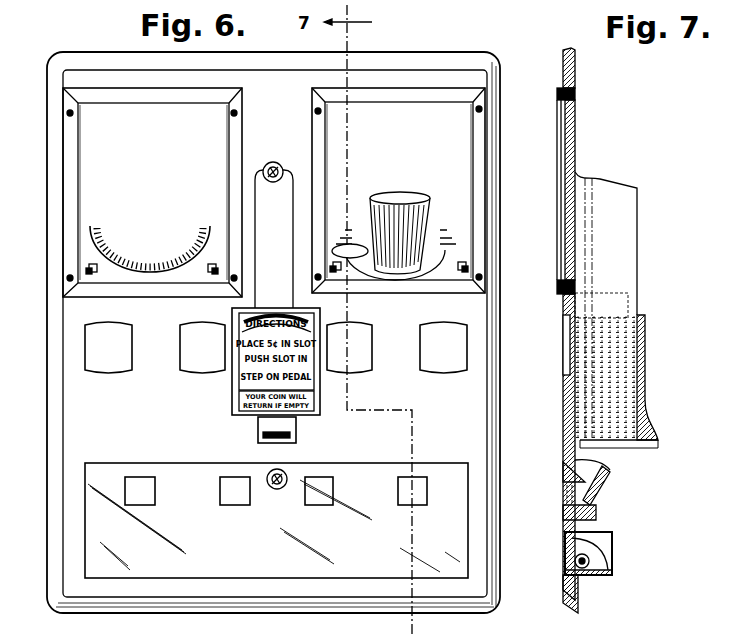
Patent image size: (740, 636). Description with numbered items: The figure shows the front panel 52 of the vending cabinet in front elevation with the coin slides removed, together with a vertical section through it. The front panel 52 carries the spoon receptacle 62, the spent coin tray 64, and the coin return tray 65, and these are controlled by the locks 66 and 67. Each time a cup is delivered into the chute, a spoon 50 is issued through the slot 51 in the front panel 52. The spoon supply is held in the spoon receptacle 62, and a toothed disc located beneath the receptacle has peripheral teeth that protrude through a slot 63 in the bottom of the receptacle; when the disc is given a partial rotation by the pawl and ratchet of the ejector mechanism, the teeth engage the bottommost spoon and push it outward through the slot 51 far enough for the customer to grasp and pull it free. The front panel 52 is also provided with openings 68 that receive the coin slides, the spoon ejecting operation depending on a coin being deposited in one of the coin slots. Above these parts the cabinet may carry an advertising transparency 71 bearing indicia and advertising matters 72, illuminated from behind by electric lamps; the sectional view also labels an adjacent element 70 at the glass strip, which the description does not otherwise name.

In FIG. 6, the spoon 50 is at (296, 434).
In FIG. 7, the spoon 50 is at (640, 313).
In FIG. 6, the slot 51 is at (258, 434).
In FIG. 6, the front panel 52 is at (273, 332).
In FIG. 7, the front panel 52 is at (566, 586).
In FIG. 7, the spoon receptacle 62 is at (616, 306).
In FIG. 7, the slot 63 is at (633, 441).
In FIG. 7, the spent coin tray 64 is at (596, 556).
In FIG. 6, the coin return tray 65 is at (276, 486).
In FIG. 7, the coin return tray 65 is at (610, 466).
In FIG. 6, the lock 66 is at (273, 162).
In FIG. 6, the lock 67 is at (272, 490).
In FIG. 6, the openings 68 is at (276, 347).
In FIG. 7, the openings 68 is at (564, 345).
In FIG. 7, the glass pane 70 is at (571, 110).
In FIG. 6, the advertising transparency 71 is at (275, 192).
In FIG. 7, the advertising transparency 71 is at (571, 134).
In FIG. 6, the indicia and advertising matters 72 is at (86, 147).